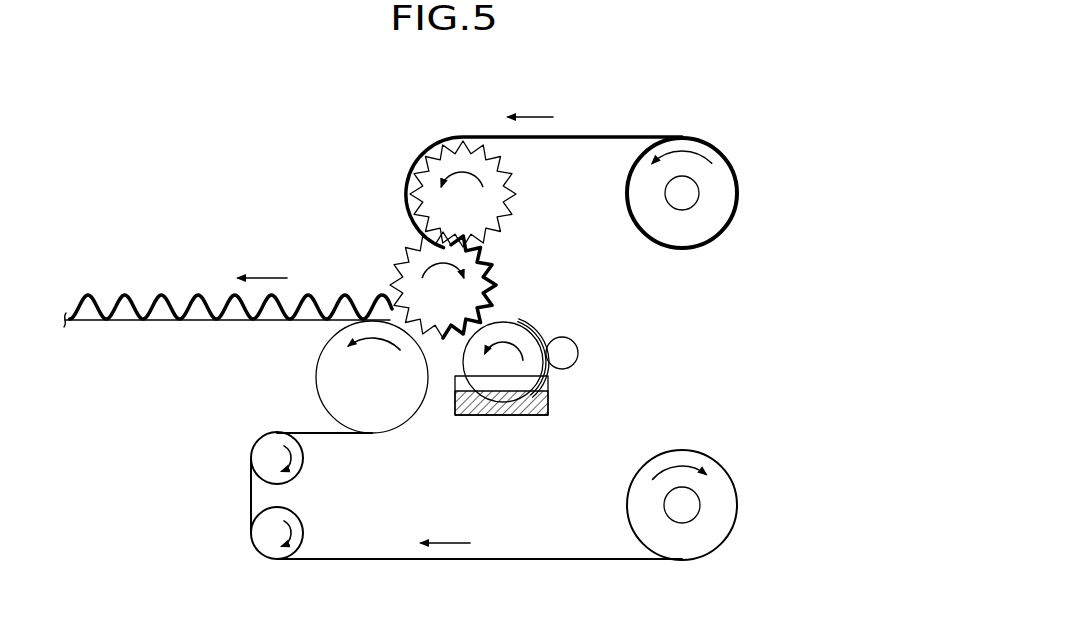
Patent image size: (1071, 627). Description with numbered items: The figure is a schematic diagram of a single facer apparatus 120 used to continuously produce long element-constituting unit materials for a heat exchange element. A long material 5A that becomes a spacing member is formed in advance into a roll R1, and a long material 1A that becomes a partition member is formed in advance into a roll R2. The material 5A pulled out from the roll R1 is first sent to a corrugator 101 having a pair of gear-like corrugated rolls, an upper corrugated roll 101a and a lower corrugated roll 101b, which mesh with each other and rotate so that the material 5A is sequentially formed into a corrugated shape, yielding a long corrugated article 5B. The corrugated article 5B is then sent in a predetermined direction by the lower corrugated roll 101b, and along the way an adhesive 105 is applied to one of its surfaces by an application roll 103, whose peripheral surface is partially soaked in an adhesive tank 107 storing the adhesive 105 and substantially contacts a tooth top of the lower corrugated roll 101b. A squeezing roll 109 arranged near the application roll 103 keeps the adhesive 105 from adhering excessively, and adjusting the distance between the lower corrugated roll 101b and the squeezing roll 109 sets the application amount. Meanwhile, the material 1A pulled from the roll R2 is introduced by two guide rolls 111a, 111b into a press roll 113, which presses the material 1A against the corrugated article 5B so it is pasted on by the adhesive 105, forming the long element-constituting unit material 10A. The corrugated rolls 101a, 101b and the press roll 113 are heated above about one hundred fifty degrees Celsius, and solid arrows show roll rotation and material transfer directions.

The apparatus 120 is at (698, 98).
The material 5A is at (609, 135).
The roll R1 is at (720, 192).
The upper corrugated roll 101a is at (490, 197).
The lower corrugated roll 101b is at (408, 272).
The corrugator 101 is at (486, 243).
The corrugated article 5B is at (497, 279).
The application roll 103 is at (515, 340).
The squeezing roll 109 is at (579, 353).
The adhesive tank 107 is at (549, 382).
The adhesive 105 is at (500, 409).
The element-constituting unit material 10A is at (162, 325).
The press roll 113 is at (330, 378).
The material 1A is at (612, 563).
The guide roll 111b is at (265, 460).
The guide roll 111a is at (265, 535).
The roll R2 is at (720, 505).